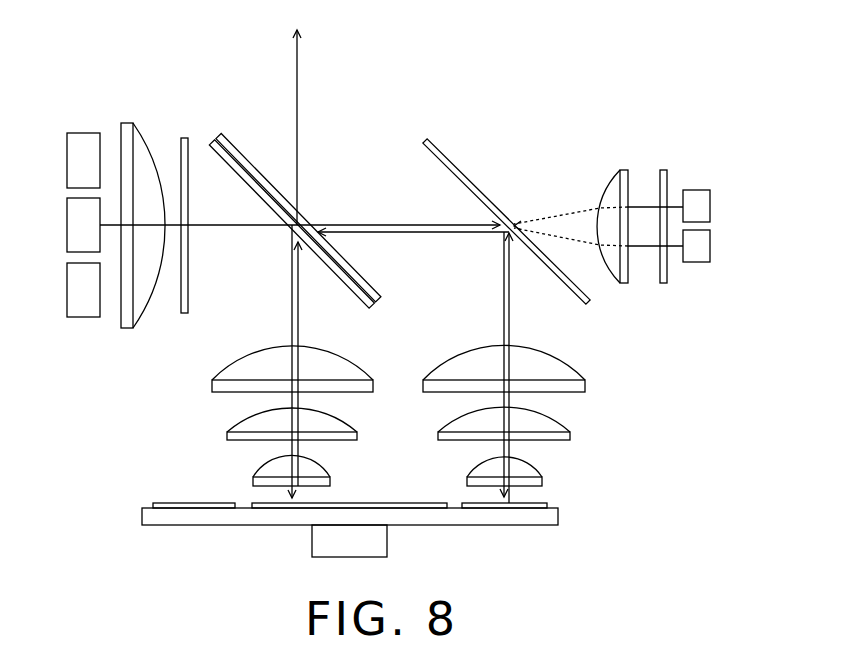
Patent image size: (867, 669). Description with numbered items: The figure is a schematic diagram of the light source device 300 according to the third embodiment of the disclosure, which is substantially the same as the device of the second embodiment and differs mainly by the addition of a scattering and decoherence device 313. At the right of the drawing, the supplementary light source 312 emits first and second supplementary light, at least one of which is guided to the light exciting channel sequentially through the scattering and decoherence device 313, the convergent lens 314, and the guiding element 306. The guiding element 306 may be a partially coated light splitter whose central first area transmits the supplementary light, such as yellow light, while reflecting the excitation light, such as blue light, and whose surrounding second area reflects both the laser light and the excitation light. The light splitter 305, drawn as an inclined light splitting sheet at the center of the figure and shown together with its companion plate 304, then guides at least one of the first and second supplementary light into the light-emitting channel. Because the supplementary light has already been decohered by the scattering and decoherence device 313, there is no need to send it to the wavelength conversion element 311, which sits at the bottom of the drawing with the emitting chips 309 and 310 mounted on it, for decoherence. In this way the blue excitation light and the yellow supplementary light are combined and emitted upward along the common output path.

The light source device 300 is at (198, 68).
The first optical plate of beam splitter 304 is at (357, 303).
The light splitter 305 is at (305, 215).
The guiding element 306 is at (440, 145).
The light emitting chip 309 is at (348, 503).
The light emitting chip 310 is at (540, 497).
The wavelength conversion element 311 is at (400, 542).
The supplementary light source 312 is at (698, 187).
The scattering and decoherence device 313 is at (662, 285).
The convergent lens 314 is at (622, 168).